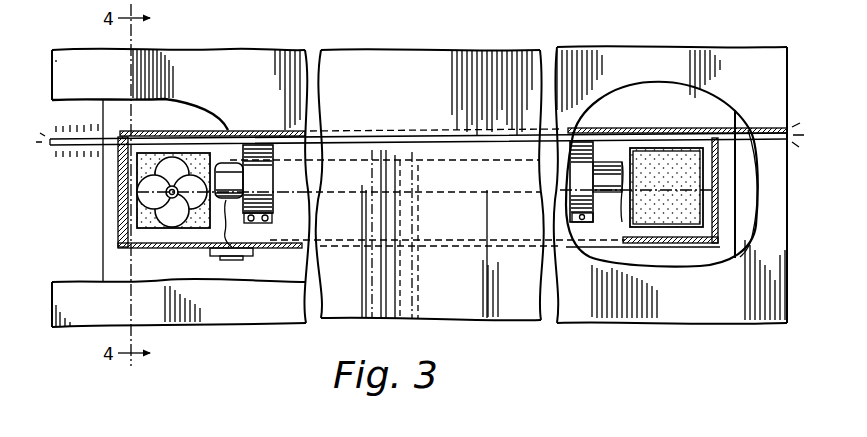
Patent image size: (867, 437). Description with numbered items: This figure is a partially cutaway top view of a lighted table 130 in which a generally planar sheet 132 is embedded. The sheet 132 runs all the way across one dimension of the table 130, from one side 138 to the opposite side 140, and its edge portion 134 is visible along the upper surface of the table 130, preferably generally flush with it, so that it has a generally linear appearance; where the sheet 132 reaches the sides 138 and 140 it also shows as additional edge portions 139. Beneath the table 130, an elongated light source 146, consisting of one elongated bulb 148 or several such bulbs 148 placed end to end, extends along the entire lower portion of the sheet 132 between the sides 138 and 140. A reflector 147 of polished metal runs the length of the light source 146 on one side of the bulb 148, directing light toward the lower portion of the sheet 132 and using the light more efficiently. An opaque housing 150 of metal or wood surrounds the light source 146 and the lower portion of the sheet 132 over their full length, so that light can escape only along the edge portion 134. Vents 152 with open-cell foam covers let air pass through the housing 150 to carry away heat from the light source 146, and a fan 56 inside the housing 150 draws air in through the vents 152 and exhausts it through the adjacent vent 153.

The fan 56 is at (136, 183).
The table 130 is at (434, 32).
The sheet 132 is at (406, 132).
The edge portion 134 is at (341, 139).
The side 138 is at (55, 67).
The additional edge portions 139 is at (44, 150).
The opposite side 140 is at (787, 82).
The light source 146 is at (243, 233).
The reflector 147 is at (256, 170).
The elongated bulb 148 is at (230, 168).
The housing 150 is at (150, 246).
The vents 152 is at (683, 210).
The vent 153 is at (140, 220).